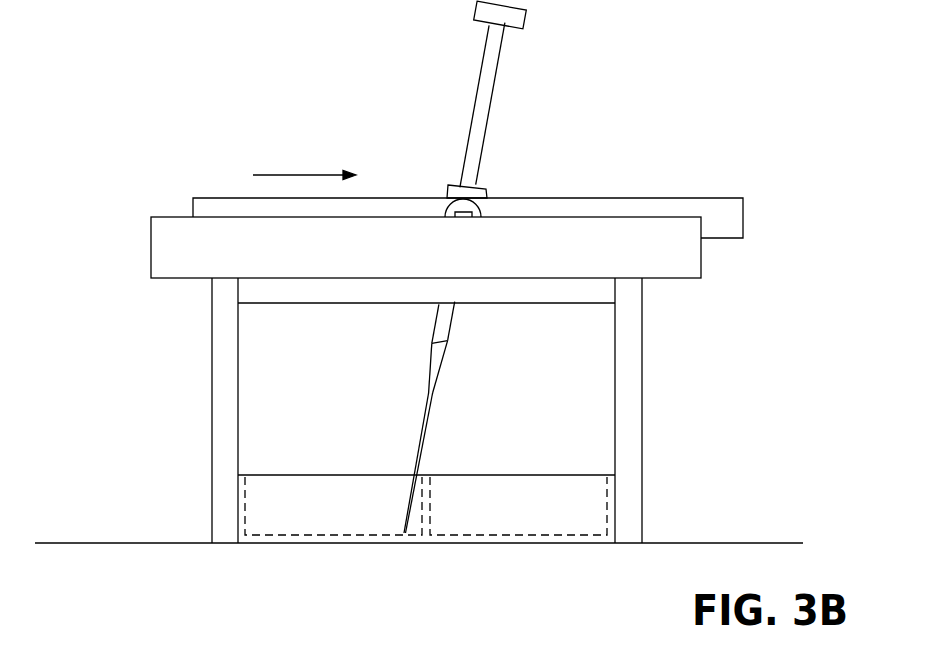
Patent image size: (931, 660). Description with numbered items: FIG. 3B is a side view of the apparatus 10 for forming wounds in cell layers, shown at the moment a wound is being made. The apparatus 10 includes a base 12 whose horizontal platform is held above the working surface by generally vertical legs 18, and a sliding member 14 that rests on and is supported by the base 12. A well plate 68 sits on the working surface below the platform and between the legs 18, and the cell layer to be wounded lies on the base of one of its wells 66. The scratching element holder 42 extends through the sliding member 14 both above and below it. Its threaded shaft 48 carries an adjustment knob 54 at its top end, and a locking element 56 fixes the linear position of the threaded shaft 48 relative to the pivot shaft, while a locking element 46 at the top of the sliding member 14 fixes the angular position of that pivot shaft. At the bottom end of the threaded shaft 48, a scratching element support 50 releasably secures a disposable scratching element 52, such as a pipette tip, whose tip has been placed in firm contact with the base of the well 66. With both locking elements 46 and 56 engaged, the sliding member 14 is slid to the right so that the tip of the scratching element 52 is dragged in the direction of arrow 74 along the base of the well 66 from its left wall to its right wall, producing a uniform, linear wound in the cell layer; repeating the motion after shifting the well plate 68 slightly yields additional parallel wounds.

The apparatus 10 is at (804, 80).
The base 12 is at (114, 251).
The sliding member 14 is at (771, 183).
The legs 18 is at (220, 403).
The scratching element holder 42 is at (418, 106).
The locking element 46 is at (468, 213).
The threaded shaft 48 is at (487, 107).
The scratching element support 50 is at (474, 352).
The scratching element 52 is at (427, 430).
The adjustment knob 54 is at (517, 15).
The locking element 56 is at (450, 186).
The well 66 is at (321, 515).
The well plate 68 is at (543, 452).
The arrow 74 is at (297, 172).